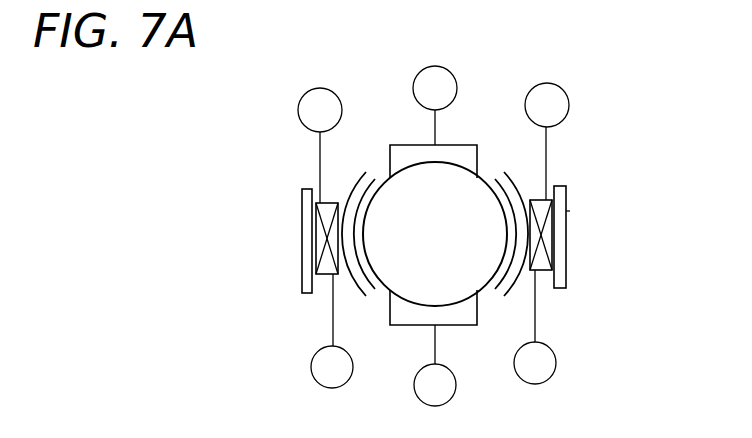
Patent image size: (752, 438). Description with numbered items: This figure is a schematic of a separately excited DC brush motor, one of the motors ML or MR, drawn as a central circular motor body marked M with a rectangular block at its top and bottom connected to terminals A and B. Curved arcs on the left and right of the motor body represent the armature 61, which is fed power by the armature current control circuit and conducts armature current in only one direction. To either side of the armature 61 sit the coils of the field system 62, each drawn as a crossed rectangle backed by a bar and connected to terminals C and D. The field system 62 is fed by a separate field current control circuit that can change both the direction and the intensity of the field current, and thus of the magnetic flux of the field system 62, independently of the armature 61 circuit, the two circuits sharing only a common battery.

The armature 61 is at (381, 176).
The field system 62 is at (323, 284).